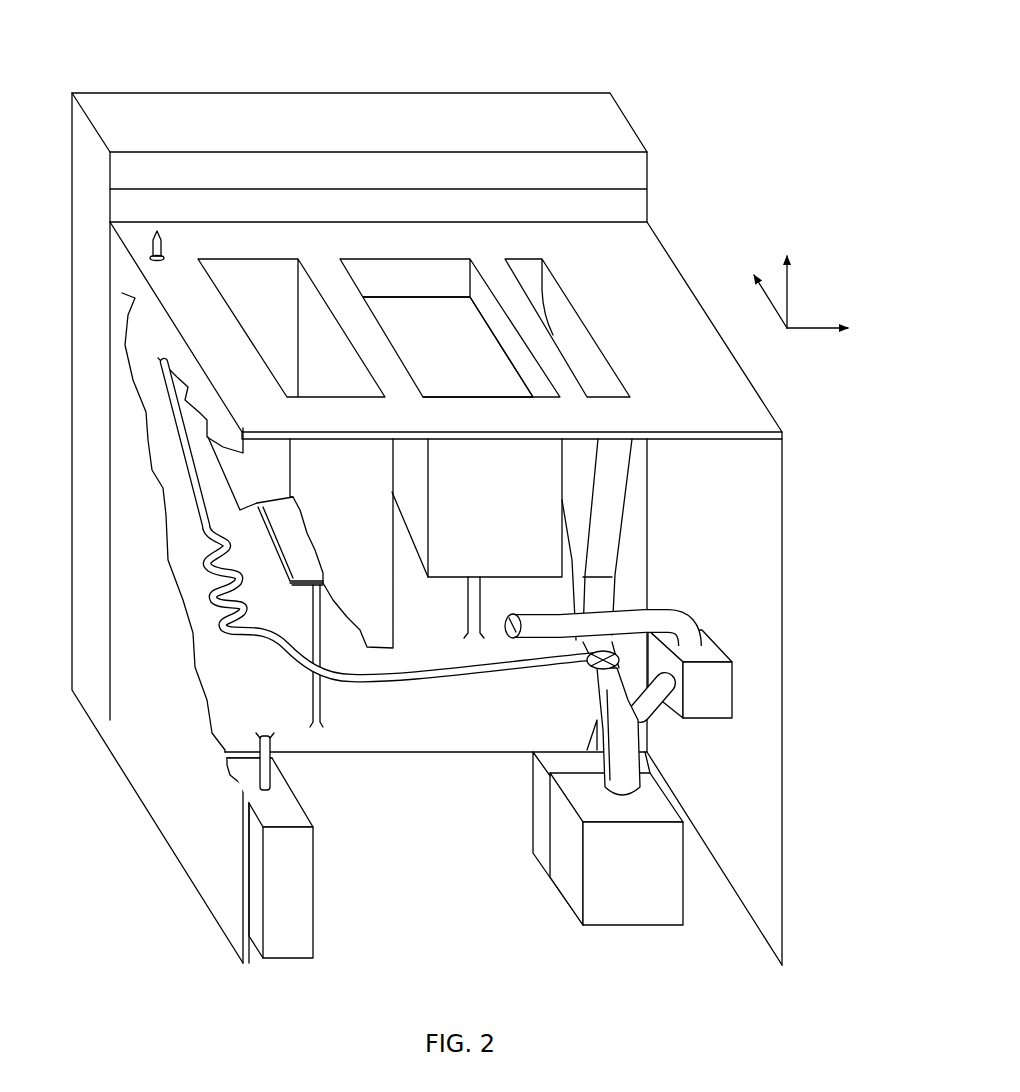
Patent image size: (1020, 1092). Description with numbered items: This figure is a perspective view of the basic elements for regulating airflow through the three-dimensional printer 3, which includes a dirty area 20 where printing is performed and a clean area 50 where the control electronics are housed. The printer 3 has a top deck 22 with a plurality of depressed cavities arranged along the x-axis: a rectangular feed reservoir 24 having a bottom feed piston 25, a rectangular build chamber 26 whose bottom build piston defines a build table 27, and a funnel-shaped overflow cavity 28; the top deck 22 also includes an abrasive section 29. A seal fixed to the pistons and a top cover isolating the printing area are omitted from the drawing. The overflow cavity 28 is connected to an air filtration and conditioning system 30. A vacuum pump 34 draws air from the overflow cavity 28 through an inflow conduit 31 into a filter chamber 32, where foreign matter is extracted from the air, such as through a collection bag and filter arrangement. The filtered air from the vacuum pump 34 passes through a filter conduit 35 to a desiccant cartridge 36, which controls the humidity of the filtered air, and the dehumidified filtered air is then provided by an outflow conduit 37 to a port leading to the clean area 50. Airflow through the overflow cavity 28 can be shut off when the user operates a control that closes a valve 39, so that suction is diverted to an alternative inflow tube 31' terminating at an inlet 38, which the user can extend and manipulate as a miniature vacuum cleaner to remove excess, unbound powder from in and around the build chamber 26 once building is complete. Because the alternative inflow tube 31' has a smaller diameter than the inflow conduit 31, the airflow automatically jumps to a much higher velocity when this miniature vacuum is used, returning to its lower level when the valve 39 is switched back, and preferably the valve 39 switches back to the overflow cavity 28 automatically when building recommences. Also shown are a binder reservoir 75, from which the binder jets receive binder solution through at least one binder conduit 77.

The clean area 50 is at (437, 517).
The three-dimensional printer 3 is at (844, 160).
The dirty area 20 is at (422, 978).
The top deck 22 is at (456, 593).
The feed reservoir 24 is at (265, 276).
The feed piston 25 is at (293, 557).
The build chamber 26 is at (411, 278).
The build table 27 is at (429, 360).
The overflow cavity 28 is at (576, 334).
The abrasive section 29 is at (645, 188).
The air filtration and conditioning system 30 is at (448, 643).
The inflow conduit 31 is at (613, 617).
The alternative inflow tube 31' is at (380, 541).
The filter chamber 32 is at (612, 877).
The vacuum pump 34 is at (550, 827).
The filter conduit 35 is at (647, 705).
The desiccant cartridge 36 is at (697, 700).
The outflow conduit 37 is at (665, 618).
The inlet 38 is at (166, 245).
The valve 39 is at (600, 668).
The binder reservoir 75 is at (297, 890).
The binder conduit 77 is at (268, 767).